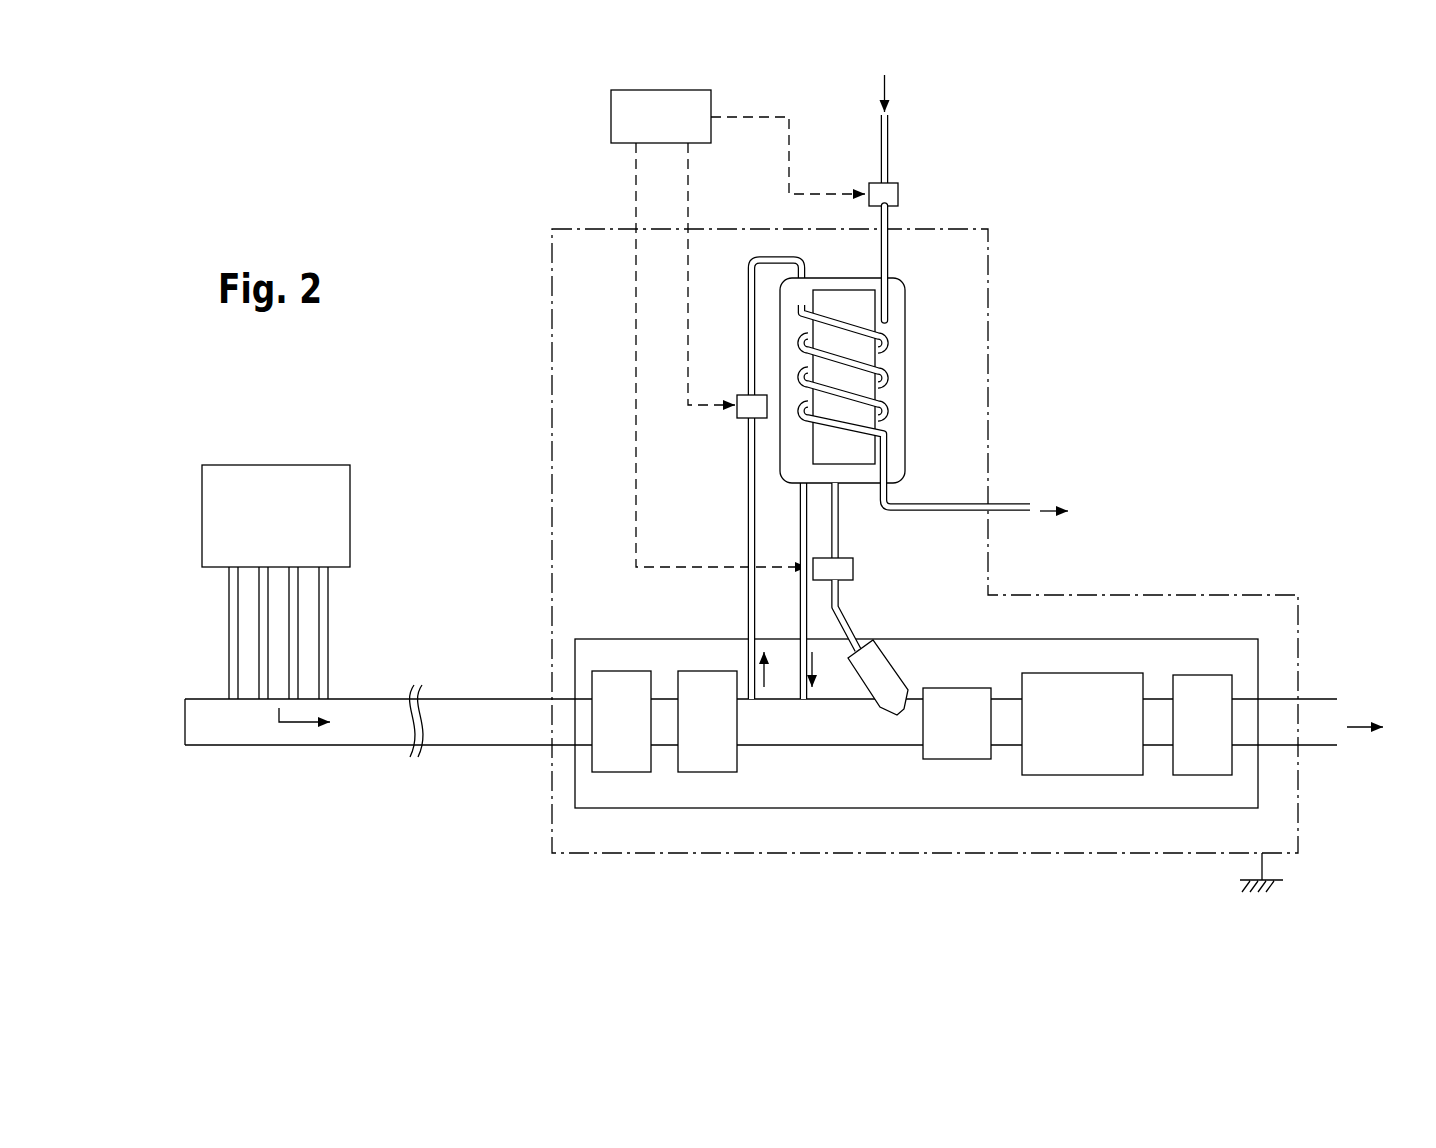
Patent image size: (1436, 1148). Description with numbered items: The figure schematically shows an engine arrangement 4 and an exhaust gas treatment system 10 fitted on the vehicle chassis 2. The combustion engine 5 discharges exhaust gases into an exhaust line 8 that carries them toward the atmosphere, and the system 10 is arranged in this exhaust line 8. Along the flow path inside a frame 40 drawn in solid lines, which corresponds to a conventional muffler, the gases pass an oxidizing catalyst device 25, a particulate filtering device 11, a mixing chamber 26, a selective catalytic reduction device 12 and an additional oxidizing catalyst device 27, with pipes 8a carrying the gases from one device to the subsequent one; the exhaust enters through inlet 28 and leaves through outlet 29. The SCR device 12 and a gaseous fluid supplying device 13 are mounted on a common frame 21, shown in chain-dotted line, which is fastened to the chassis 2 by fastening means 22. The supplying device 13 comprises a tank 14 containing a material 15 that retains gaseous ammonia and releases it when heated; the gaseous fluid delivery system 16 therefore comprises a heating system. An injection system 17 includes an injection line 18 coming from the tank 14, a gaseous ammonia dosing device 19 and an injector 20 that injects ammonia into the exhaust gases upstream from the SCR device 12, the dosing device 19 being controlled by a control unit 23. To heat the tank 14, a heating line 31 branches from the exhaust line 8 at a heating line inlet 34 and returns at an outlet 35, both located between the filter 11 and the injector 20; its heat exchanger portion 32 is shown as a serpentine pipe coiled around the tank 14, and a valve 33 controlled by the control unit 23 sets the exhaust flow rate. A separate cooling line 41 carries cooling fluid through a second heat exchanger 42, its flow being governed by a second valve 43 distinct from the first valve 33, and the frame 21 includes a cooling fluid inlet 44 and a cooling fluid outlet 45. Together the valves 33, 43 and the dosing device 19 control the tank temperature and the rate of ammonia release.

The vehicle chassis 2 is at (1275, 883).
The engine arrangement 4 is at (1125, 322).
The combustion engine 5 is at (264, 528).
The exhaust line 8 is at (380, 727).
The pipes 8a is at (867, 749).
The exhaust gas treatment system 10 is at (732, 862).
The particulate filtering device 11 is at (692, 738).
The selective catalytic reduction device 12 is at (1067, 738).
The gaseous fluid supplying device 13 is at (762, 479).
The tank 14 is at (905, 449).
The material 15 is at (858, 414).
The gaseous fluid delivery system 16 is at (876, 379).
The injection system 17 is at (877, 612).
The injection line 18 is at (840, 514).
The gaseous ammonia dosing device 19 is at (853, 568).
The injector 20 is at (890, 670).
The frame 21 is at (1298, 620).
The fastening means 22 is at (1262, 862).
The control unit 23 is at (647, 133).
The oxidizing catalyst device 25 is at (606, 738).
The mixing chamber 26 is at (942, 738).
The additional oxidizing catalyst device 27 is at (1187, 738).
The exhaust inlet 28 is at (550, 720).
The exhaust outlet 29 is at (1302, 715).
The heating line 31 is at (748, 600).
The heat exchanger portion 32 is at (838, 330).
The valve 33 is at (747, 413).
The heating line inlet 34 is at (752, 702).
The heating line outlet 35 is at (800, 702).
The frame 40 is at (1172, 639).
The cooling line 41 is at (888, 163).
The second heat exchanger 42 is at (886, 380).
The second valve 43 is at (893, 198).
The cooling fluid inlet 44 is at (888, 232).
The cooling fluid outlet 45 is at (990, 507).